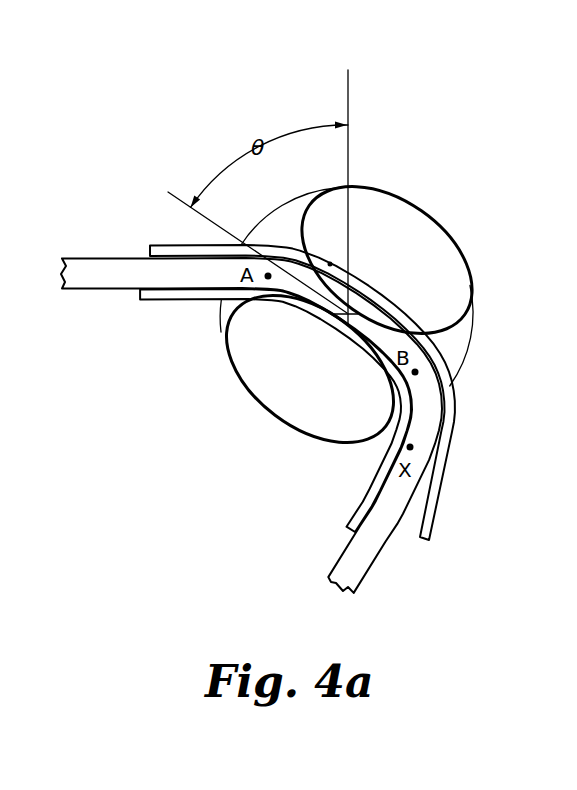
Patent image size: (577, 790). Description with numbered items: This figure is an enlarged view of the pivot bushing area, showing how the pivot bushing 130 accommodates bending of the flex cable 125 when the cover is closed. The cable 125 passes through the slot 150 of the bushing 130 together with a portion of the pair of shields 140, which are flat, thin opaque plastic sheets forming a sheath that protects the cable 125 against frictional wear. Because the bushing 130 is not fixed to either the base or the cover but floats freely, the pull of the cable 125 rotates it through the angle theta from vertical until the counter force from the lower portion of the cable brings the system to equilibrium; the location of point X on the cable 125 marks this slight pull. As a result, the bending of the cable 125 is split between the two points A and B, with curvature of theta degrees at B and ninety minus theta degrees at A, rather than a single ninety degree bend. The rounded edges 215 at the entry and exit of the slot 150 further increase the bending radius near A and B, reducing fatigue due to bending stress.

The flex cable 125 is at (374, 556).
The pivot bushing 130 is at (437, 211).
The shields 140 is at (450, 443).
The slot 150 is at (457, 343).
The rounded edges 215 is at (467, 323).